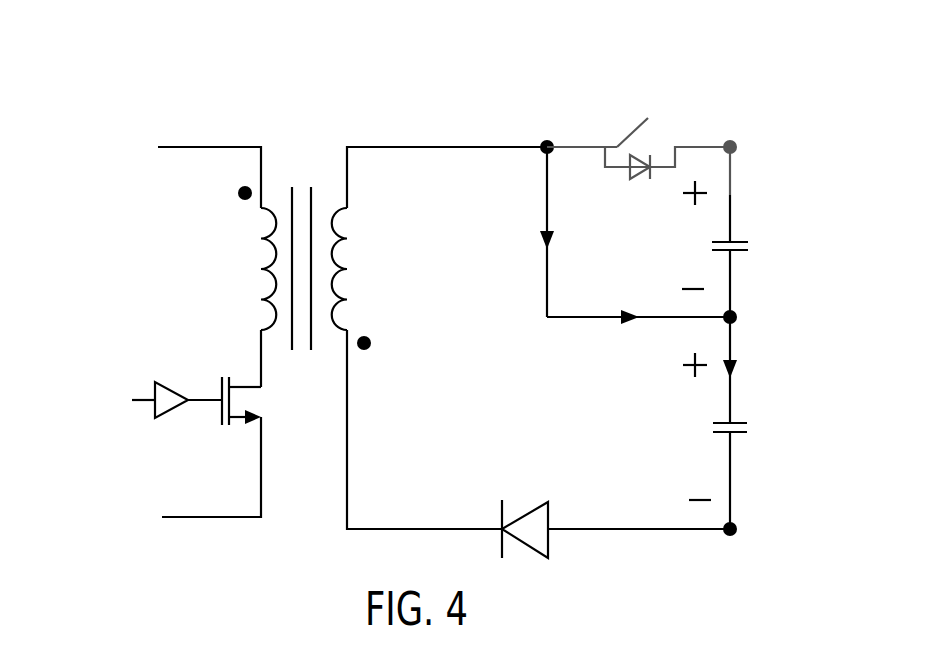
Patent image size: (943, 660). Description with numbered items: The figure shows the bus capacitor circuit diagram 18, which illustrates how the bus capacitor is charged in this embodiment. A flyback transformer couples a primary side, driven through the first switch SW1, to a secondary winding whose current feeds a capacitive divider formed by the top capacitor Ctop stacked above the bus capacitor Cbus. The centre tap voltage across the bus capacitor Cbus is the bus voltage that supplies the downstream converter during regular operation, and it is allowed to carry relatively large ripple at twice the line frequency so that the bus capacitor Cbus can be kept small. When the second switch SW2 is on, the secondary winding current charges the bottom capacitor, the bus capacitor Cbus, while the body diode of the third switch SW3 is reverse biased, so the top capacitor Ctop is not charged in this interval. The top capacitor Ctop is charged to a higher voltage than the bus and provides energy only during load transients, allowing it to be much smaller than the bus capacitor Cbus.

The bus capacitor circuit diagram 18 is at (73, 111).
The first switch SW1 is at (165, 402).
The second switch SW2 is at (512, 232).
The third switch SW3 is at (642, 139).
The top capacitor Ctop is at (707, 235).
The bus capacitor Cbus is at (709, 426).